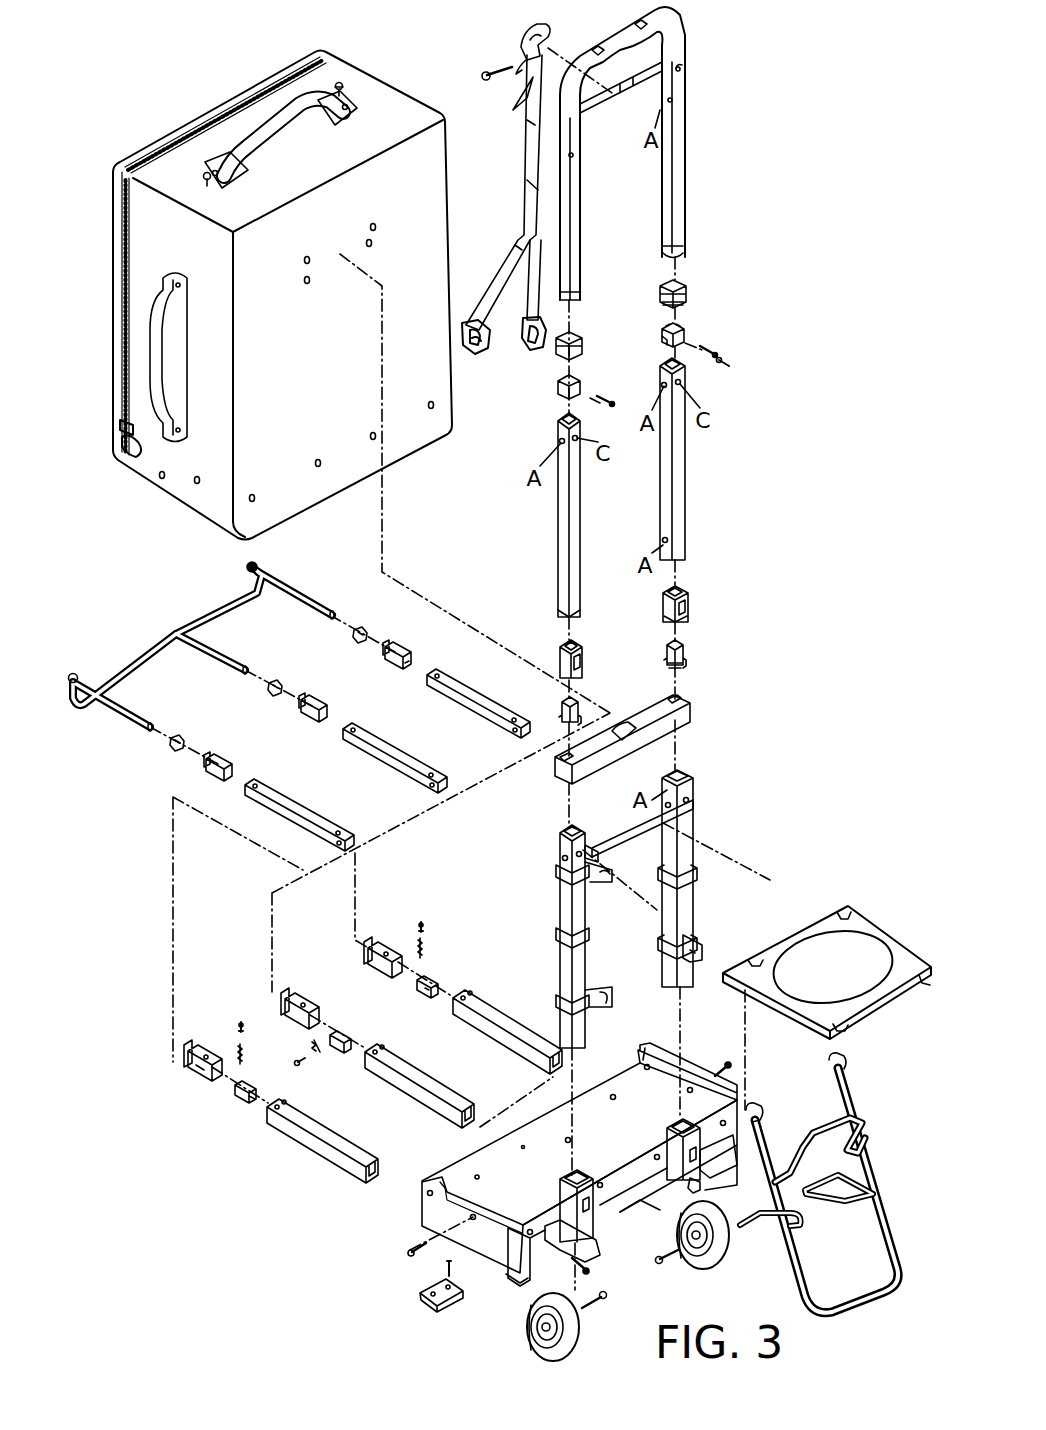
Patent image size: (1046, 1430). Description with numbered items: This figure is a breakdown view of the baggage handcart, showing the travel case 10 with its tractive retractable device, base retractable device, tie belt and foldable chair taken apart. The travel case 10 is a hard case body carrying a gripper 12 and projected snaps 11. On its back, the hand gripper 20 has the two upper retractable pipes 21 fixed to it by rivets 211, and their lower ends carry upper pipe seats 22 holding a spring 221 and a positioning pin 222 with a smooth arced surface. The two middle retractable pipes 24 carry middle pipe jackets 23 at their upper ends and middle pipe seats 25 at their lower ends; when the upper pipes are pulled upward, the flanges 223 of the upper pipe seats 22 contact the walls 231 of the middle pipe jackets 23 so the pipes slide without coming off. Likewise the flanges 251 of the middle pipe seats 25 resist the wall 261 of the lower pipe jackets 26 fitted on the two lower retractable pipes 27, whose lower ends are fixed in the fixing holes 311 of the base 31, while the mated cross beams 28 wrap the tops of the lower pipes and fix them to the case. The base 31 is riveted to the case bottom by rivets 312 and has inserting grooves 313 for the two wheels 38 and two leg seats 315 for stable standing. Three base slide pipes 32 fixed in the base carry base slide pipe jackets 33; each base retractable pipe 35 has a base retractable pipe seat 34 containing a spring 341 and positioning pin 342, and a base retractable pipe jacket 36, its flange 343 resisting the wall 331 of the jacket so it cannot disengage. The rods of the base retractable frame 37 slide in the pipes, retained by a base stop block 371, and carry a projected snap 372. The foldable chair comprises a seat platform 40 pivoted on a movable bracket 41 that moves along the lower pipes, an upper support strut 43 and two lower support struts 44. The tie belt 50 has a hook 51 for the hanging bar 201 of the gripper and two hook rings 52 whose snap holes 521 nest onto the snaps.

The travel case 10 is at (452, 227).
The projected snaps 11 is at (344, 88).
The gripper 12 is at (263, 120).
The hand gripper 20 is at (686, 34).
The upper retractable pipes 21 is at (686, 182).
The hanging bar 201 is at (623, 100).
The rivets 211 is at (686, 68).
The upper pipe seats 22 is at (685, 334).
The spring 221 is at (707, 358).
The positioning pin 222 is at (728, 366).
The flanges 223 is at (664, 340).
The middle pipe jackets 23 is at (687, 290).
The walls 231 is at (687, 305).
The middle retractable pipes 24 is at (686, 463).
The middle pipe seats 25 is at (684, 652).
The flanges 251 is at (687, 667).
The lower pipe jackets 26 is at (689, 598).
The wall 261 is at (689, 614).
The lower retractable pipes 27 is at (700, 842).
The cross beams 28 is at (652, 712).
The base 31 is at (548, 1140).
The fixing holes 311 is at (676, 1125).
The rivets 312 is at (414, 1246).
The inserting grooves 313 is at (587, 1263).
The leg seats 315 is at (428, 1308).
The base slide pipes 32 is at (515, 1054).
The base slide pipe jackets 33 is at (386, 948).
The wall 331 is at (203, 1074).
The base retractable pipe seats 34 is at (426, 996).
The spring 341 is at (424, 948).
The positioning pin 342 is at (423, 922).
The flange 343 is at (252, 1100).
The base retractable pipes 35 is at (480, 690).
The base retractable pipe jackets 36 is at (406, 652).
The base retractable frame 37 is at (220, 615).
The base stop block 371 is at (362, 632).
The projected snap 372 is at (246, 566).
The wheels 38 is at (580, 1345).
The seat platform 40 is at (876, 931).
The movable bracket 41 is at (616, 838).
The upper support strut 43 is at (816, 1128).
The lower support struts 44 is at (836, 1200).
The tie belt 50 is at (525, 150).
The hook 51 is at (528, 40).
The hook rings 52 is at (490, 338).
The snap holes 521 is at (478, 349).